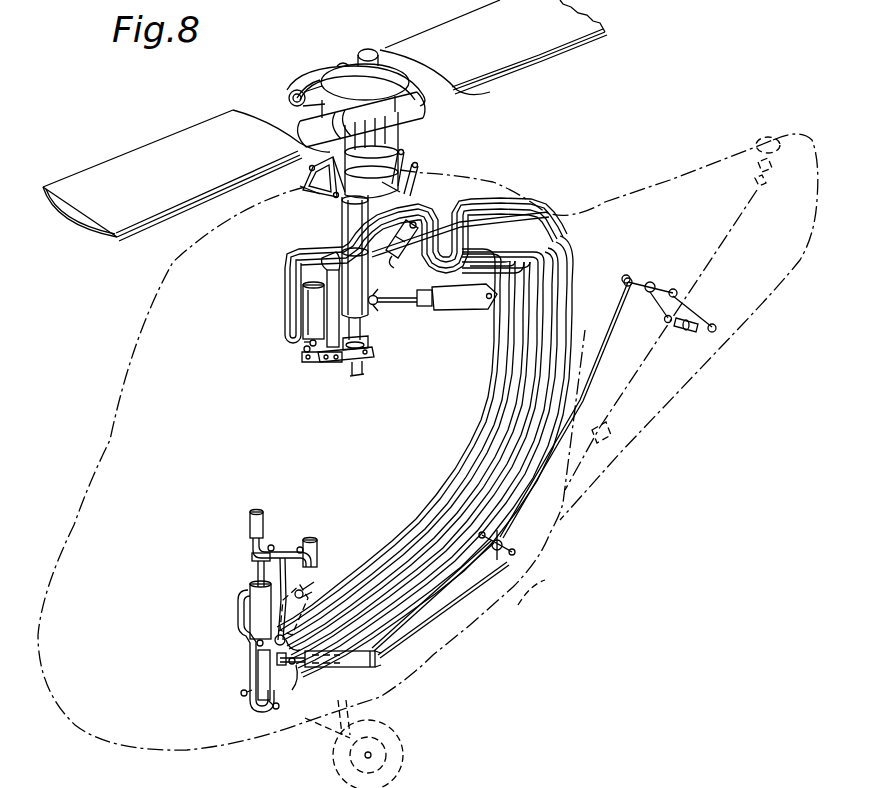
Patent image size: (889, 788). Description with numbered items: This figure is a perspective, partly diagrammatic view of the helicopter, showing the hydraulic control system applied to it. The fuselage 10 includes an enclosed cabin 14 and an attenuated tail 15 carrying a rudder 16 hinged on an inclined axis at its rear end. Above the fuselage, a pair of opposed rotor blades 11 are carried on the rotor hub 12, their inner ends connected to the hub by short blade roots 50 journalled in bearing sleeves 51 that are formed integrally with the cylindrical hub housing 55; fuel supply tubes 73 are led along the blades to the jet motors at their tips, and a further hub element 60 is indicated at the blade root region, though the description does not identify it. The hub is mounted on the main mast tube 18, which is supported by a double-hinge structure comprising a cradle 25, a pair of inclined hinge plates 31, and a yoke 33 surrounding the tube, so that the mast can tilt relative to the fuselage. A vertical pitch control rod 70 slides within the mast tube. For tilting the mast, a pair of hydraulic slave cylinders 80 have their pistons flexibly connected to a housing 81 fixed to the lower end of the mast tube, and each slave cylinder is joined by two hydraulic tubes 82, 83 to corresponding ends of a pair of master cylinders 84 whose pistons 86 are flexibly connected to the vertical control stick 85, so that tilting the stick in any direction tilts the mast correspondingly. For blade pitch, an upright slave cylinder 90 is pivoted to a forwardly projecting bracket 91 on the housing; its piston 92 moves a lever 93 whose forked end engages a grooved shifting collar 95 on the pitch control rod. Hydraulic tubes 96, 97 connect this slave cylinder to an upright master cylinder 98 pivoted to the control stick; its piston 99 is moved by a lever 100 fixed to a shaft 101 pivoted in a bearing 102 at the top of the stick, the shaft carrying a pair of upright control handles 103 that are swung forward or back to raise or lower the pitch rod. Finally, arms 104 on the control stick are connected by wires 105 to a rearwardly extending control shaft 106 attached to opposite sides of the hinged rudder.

The fuselage 10 is at (92, 458).
The rotor blade 11 is at (142, 151).
The rotor hub 12 is at (346, 55).
The cabin 14 is at (130, 362).
The tail 15 is at (607, 202).
The rudder 16 is at (729, 338).
The mast tube 18 is at (352, 217).
The cradle 25 is at (391, 118).
The hinge plate 31 is at (300, 183).
The yoke 33 is at (303, 200).
The blade root 50 is at (283, 104).
The bearing sleeve 51 is at (420, 116).
The hub housing 55 is at (408, 118).
The blade root arm 60 is at (289, 96).
The pitch control rod 70 is at (376, 338).
The fuel supply tube 73 is at (320, 80).
The hydraulic slave cylinder 80 is at (460, 306).
The housing 81 is at (379, 309).
The hydraulic tube 82 is at (455, 210).
The hydraulic tube 83 is at (442, 222).
The hydraulic master cylinder 84 is at (300, 597).
The control stick 85 is at (289, 542).
The piston 86 is at (292, 637).
The hydraulic slave cylinder 90 is at (305, 315).
The bracket 91 is at (336, 270).
The piston 92 is at (304, 350).
The lever 93 is at (330, 364).
The shifting collar 95 is at (369, 340).
The hydraulic tube 96 is at (283, 302).
The hydraulic tube 97 is at (286, 266).
The master cylinder 98 is at (250, 607).
The piston 99 is at (252, 573).
The lever 100 is at (262, 552).
The shaft 101 is at (271, 533).
The bearing 102 is at (306, 543).
The control handle 103 is at (250, 522).
The arm 104 is at (250, 690).
The wire 105 is at (450, 582).
The control shaft 106 is at (600, 357).